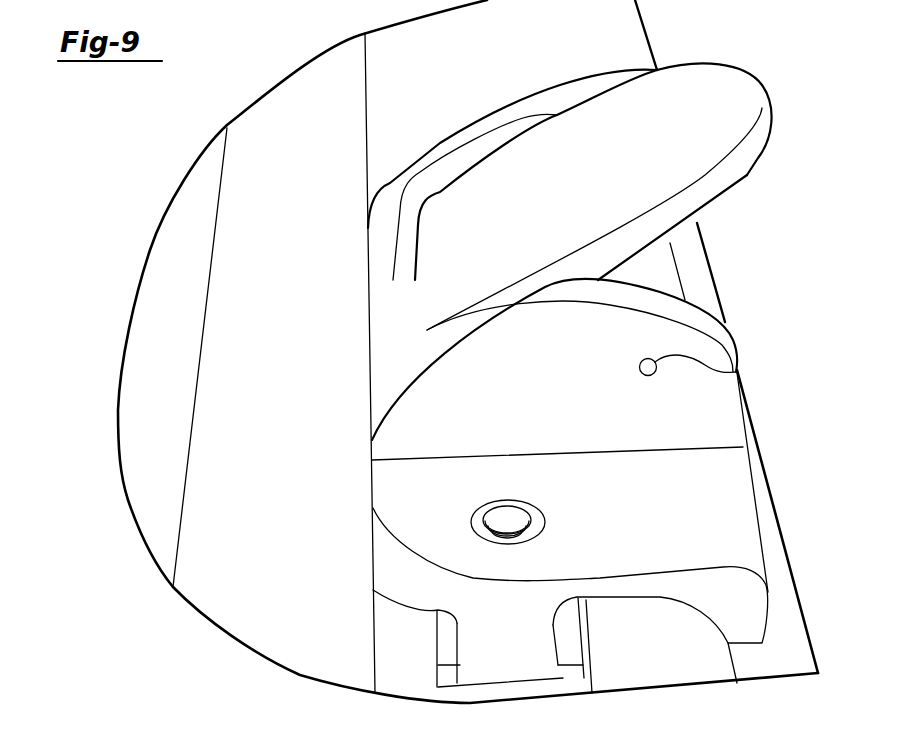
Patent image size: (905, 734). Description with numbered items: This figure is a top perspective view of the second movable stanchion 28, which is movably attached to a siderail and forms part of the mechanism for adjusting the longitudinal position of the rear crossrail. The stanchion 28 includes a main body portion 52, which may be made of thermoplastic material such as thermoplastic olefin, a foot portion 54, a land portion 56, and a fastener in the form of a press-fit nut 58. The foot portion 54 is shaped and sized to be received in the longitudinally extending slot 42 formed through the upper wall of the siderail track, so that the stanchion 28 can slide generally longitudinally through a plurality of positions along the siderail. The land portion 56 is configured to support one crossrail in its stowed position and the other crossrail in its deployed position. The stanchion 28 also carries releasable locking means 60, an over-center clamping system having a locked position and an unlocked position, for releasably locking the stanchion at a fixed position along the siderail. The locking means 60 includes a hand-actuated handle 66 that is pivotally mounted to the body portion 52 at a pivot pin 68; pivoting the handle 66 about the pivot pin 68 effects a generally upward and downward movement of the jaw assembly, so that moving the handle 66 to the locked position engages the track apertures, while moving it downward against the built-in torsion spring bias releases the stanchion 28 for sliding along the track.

The stanchion 28 is at (732, 242).
The longitudinally extending slot 42 is at (569, 636).
The main body portion 52 is at (397, 362).
The foot portion 54 is at (485, 638).
The land portion 56 is at (430, 502).
The press-fit nut 58 is at (520, 512).
The releasable locking means 60 is at (703, 41).
The hand-actuated handle 66 is at (762, 130).
The pivot pin 68 is at (737, 372).